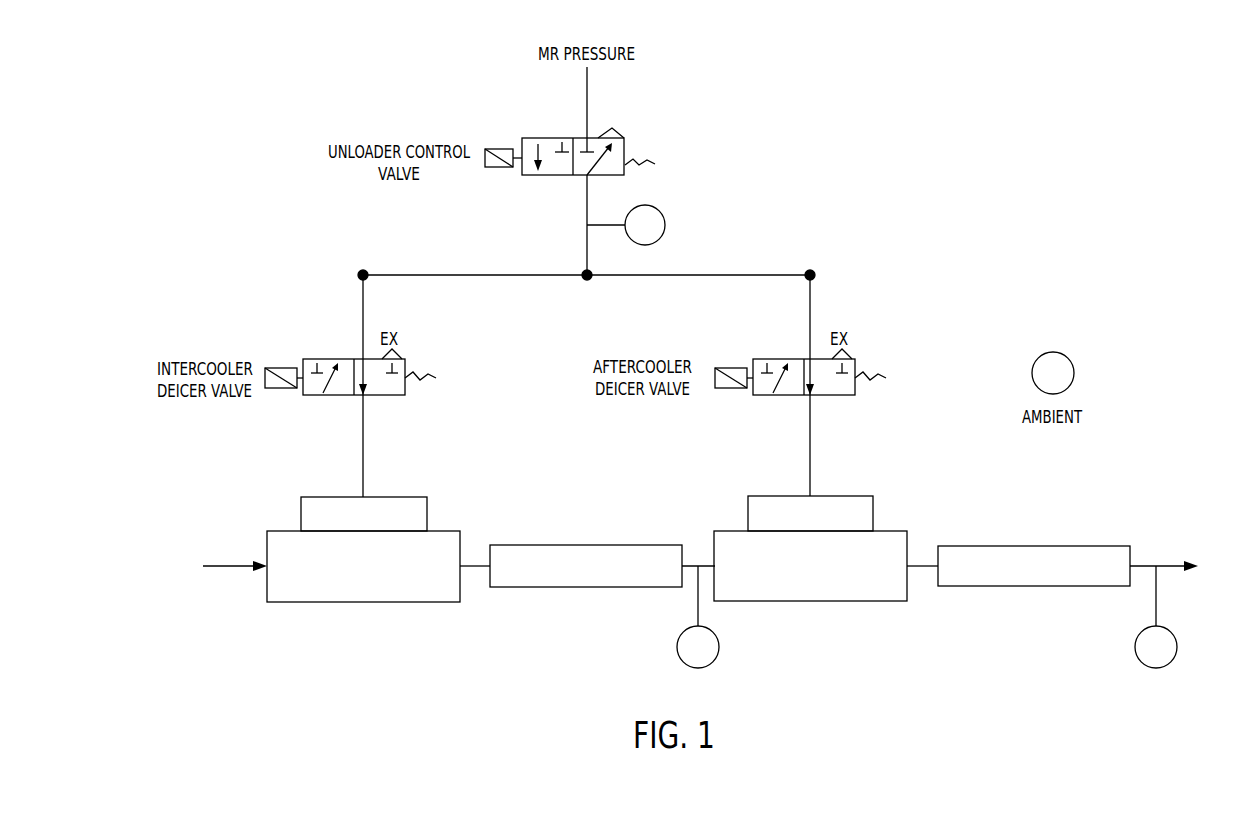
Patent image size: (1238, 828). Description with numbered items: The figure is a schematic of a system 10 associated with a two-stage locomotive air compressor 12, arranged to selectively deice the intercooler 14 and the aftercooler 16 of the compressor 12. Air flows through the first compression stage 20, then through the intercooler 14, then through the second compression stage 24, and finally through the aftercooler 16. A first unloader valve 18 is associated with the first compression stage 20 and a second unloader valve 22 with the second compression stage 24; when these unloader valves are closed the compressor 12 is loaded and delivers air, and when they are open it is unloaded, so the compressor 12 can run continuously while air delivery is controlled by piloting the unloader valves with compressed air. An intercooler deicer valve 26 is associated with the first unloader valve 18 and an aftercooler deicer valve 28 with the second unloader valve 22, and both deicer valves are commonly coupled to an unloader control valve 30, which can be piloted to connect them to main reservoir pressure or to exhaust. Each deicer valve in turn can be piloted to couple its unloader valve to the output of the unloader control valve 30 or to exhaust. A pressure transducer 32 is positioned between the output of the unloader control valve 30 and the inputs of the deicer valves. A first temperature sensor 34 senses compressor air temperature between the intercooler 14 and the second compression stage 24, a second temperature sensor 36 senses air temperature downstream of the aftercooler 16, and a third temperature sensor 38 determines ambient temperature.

The system 10 is at (227, 113).
The two-stage locomotive air compressor 12 is at (272, 622).
The intercooler 14 is at (587, 587).
The aftercooler 16 is at (1035, 586).
The first unloader valve 18 is at (327, 497).
The first compression stage 20 is at (363, 602).
The second unloader valve 22 is at (777, 496).
The second compression stage 24 is at (812, 601).
The intercooler deicer valve 26 is at (392, 395).
The aftercooler deicer valve 28 is at (827, 395).
The unloader control valve 30 is at (625, 172).
The pressure transducer 32 is at (667, 225).
The first temperature sensor 34 is at (718, 647).
The second temperature sensor 36 is at (1135, 647).
The third temperature sensor 38 is at (1053, 352).